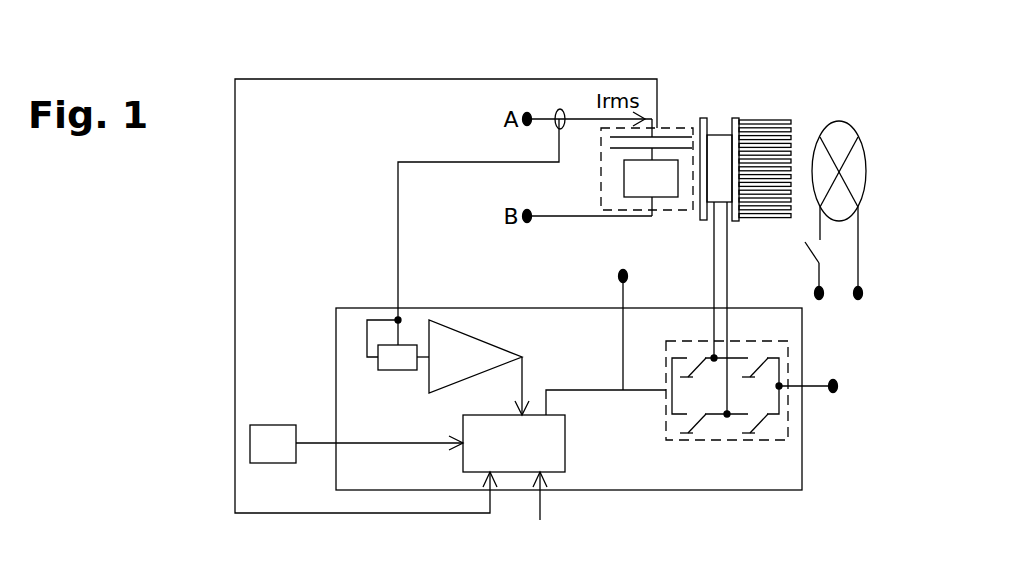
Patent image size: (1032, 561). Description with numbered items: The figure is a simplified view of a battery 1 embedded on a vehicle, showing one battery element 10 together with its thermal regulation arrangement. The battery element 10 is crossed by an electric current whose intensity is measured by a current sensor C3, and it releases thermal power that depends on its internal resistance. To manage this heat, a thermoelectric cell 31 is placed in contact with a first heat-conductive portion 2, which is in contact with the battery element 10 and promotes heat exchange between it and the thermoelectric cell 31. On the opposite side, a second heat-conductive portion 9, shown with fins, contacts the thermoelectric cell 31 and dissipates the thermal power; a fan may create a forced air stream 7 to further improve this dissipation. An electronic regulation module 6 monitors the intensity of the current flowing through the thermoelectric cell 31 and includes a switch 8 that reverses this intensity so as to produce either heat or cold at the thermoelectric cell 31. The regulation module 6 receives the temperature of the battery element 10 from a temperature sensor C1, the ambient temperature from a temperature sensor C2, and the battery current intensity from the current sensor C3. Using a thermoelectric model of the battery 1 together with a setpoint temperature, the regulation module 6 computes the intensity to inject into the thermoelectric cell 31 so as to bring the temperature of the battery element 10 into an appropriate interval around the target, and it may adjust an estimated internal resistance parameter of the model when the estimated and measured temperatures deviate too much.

The battery 1 is at (333, 41).
The first heat-conductive portion 2 is at (703, 118).
The thermoelectric cell 31 is at (718, 135).
The second heat-conductive portion 9 is at (762, 124).
The forced air stream 7 is at (886, 160).
The electronic regulation module 6 is at (558, 377).
The switch 8 is at (795, 430).
The battery element 10 is at (625, 160).
The temperature sensor C1 is at (658, 128).
The temperature sensor C2 is at (273, 444).
The current sensor C3 is at (560, 108).